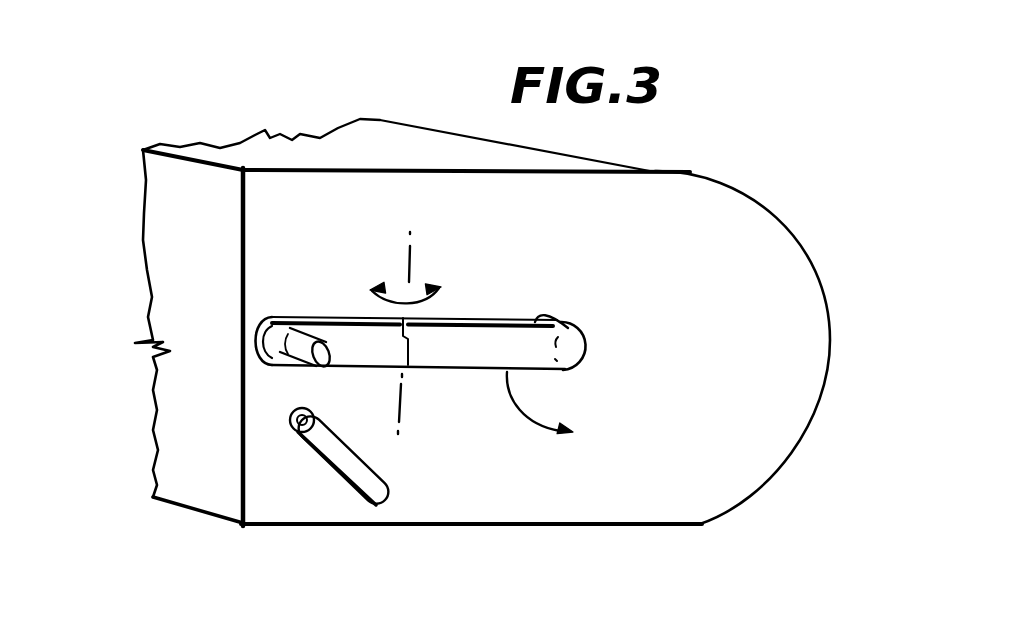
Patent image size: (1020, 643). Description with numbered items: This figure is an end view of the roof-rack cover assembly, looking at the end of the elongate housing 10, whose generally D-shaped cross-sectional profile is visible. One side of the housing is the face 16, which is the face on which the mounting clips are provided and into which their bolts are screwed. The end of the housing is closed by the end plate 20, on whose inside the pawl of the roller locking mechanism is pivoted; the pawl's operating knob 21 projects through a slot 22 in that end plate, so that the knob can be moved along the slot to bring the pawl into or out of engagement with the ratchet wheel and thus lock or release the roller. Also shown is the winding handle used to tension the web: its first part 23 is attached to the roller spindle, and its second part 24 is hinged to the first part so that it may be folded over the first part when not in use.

The housing 10 is at (798, 228).
The face 16 is at (200, 238).
The end plate 20 is at (673, 462).
The operating knob 21 is at (297, 433).
The slot 22 is at (378, 495).
The first part 23 is at (470, 332).
The second part 24 is at (325, 327).